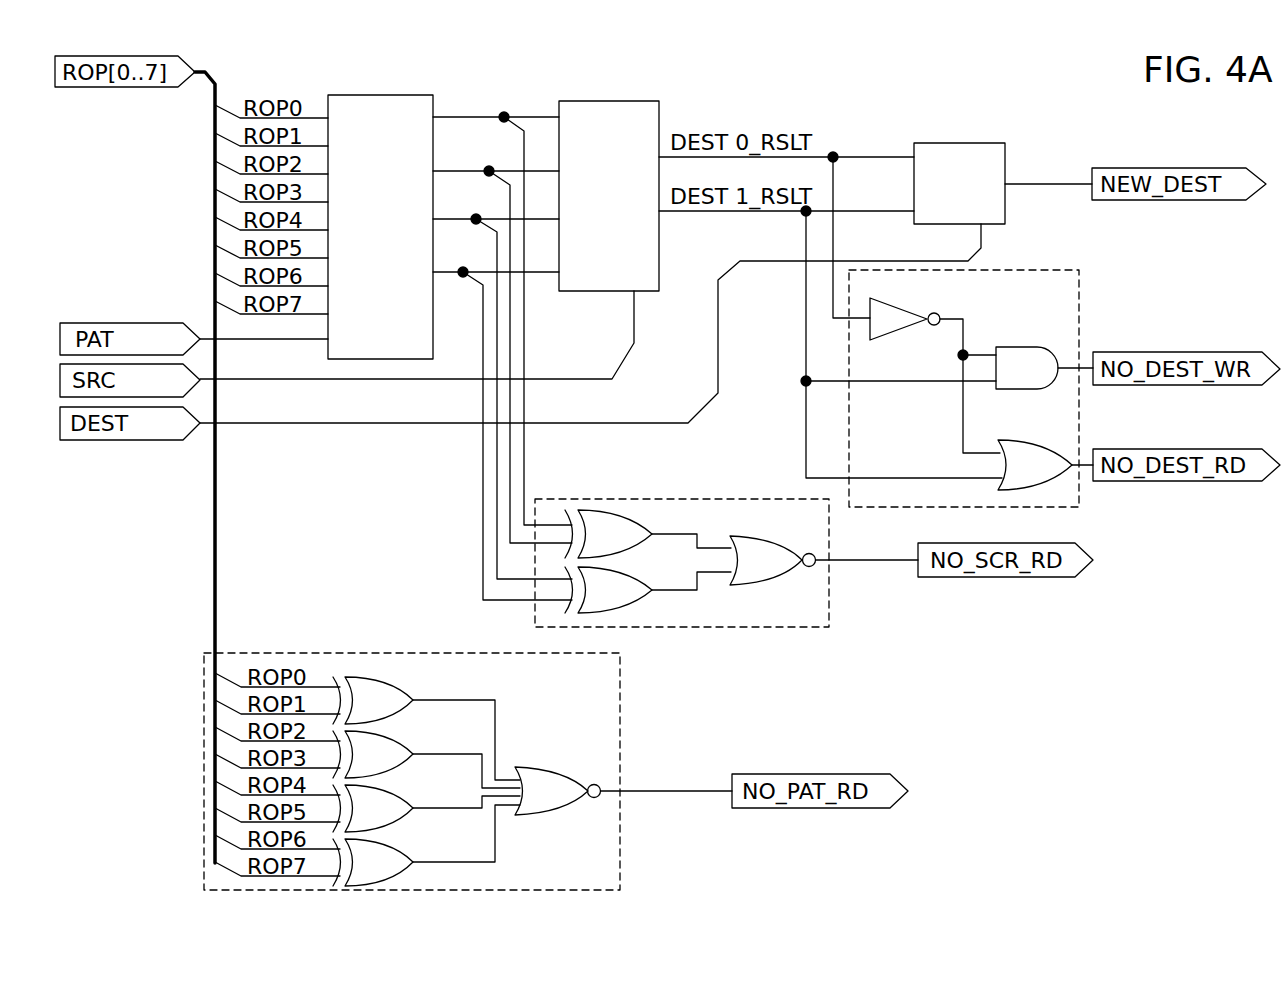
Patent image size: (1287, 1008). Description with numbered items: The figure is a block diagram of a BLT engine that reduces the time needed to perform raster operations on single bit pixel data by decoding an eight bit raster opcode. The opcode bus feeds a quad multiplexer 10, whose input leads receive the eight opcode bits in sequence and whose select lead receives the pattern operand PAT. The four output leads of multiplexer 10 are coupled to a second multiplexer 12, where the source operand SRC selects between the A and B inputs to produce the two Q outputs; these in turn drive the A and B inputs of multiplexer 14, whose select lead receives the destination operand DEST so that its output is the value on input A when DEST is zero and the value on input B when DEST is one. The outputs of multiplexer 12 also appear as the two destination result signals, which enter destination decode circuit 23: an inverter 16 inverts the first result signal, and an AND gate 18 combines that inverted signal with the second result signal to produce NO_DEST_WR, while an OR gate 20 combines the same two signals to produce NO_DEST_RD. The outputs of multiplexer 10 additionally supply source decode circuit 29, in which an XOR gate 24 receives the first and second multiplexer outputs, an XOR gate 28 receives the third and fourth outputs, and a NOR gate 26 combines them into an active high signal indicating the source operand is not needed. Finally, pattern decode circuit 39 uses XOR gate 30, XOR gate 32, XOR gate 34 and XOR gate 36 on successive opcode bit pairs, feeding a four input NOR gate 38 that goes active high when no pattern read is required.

The quad multiplexer 10 is at (433, 300).
The multiplexer 12 is at (575, 292).
The multiplexer 14 is at (1005, 203).
The inverter 16 is at (900, 299).
The AND gate 18 is at (1005, 347).
The OR gate 20 is at (1010, 440).
The destination decode circuit 23 is at (1082, 316).
The XOR gate 24 is at (612, 510).
The NOR gate 26 is at (770, 536).
The XOR gate 28 is at (632, 605).
The source decode circuit 29 is at (833, 587).
The XOR gate 30 is at (400, 677).
The XOR gate 32 is at (400, 731).
The XOR gate 34 is at (400, 785).
The XOR gate 36 is at (400, 839).
The four input NOR gate 38 is at (540, 767).
The pattern decode circuit 39 is at (622, 863).